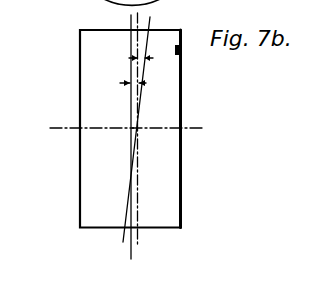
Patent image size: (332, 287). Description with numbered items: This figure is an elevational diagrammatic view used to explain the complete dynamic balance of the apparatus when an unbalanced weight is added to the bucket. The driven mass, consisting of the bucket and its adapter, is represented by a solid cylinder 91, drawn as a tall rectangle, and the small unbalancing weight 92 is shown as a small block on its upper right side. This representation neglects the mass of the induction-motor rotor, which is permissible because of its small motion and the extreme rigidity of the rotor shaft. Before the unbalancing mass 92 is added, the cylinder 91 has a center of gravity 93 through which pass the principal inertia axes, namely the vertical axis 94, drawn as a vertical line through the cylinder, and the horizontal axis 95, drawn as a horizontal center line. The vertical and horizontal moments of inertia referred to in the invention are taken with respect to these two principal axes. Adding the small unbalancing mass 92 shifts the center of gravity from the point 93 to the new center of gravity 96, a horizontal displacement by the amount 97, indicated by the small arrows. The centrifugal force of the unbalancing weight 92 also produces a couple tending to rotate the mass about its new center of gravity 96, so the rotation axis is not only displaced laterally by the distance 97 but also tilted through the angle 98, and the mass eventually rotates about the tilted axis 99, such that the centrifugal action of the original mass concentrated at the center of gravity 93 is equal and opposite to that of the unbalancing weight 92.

The solid cylinder 91 is at (80, 68).
The unbalancing weight 92 is at (181, 52).
The center of gravity 93 is at (129, 129).
The vertical axis 94 is at (129, 17).
The horizontal axis 95 is at (53, 128).
The new center of gravity 96 is at (140, 112).
The horizontal displacement 97 is at (128, 80).
The angle 98 is at (147, 57).
The axis of rotation 99 is at (152, 20).